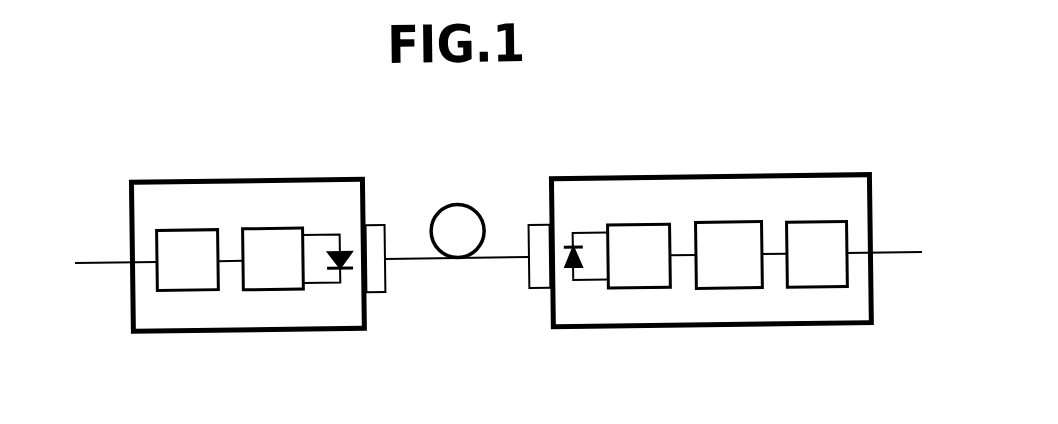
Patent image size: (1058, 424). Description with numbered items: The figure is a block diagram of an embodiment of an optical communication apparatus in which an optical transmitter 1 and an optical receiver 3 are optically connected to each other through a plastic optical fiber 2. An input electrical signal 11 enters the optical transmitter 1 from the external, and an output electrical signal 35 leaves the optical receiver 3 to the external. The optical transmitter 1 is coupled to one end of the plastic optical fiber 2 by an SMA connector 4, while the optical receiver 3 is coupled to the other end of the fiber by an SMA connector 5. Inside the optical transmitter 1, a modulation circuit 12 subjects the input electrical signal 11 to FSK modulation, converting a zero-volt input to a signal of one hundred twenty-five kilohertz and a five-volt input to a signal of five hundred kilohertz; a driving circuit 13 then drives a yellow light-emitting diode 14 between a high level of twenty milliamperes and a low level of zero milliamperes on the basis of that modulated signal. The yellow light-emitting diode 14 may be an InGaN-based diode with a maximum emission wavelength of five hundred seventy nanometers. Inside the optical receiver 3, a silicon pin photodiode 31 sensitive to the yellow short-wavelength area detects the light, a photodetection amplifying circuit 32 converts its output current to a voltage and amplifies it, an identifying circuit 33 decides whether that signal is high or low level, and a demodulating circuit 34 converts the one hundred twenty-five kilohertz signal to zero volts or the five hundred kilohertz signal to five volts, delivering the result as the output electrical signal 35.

The optical transmitter 1 is at (283, 333).
The input electrical signal 11 is at (100, 263).
The modulation circuit 12 is at (186, 231).
The driving circuit 13 is at (277, 231).
The yellow light-emitting diode 14 is at (342, 256).
The SMA connector 4 is at (378, 293).
The plastic optical fiber 2 is at (441, 264).
The SMA connector 5 is at (534, 294).
The optical receiver 3 is at (710, 333).
The silicon pin photodiode 31 is at (572, 250).
The photodetection amplifying circuit 32 is at (636, 233).
The identifying circuit 33 is at (731, 233).
The demodulating circuit 34 is at (815, 234).
The output electrical signal 35 is at (893, 263).